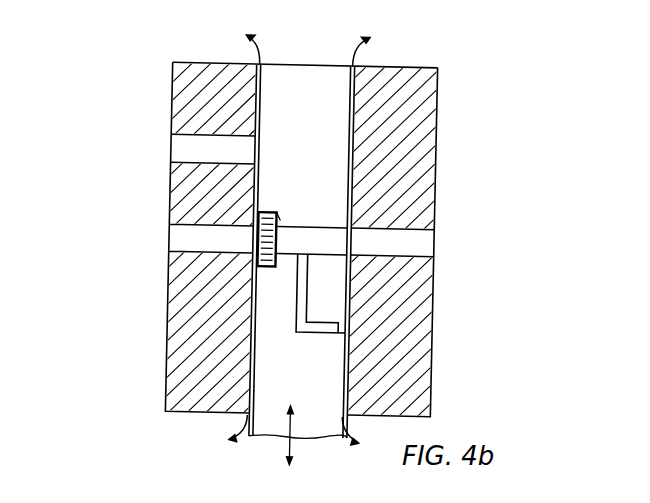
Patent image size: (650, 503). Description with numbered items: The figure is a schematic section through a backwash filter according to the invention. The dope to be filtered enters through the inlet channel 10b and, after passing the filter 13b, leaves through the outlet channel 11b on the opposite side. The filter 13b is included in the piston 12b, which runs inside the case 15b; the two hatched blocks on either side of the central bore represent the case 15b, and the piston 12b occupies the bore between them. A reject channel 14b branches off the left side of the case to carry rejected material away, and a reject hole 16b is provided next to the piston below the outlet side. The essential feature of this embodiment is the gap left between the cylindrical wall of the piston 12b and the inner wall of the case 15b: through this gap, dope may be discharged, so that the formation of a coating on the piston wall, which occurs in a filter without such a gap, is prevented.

The inlet channel 10b is at (174, 237).
The outlet channel 11b is at (428, 243).
The piston 12b is at (283, 75).
The filter 13b is at (278, 218).
The reject channel 14b is at (181, 151).
The case 15b is at (413, 147).
The reject hole 16b is at (315, 338).